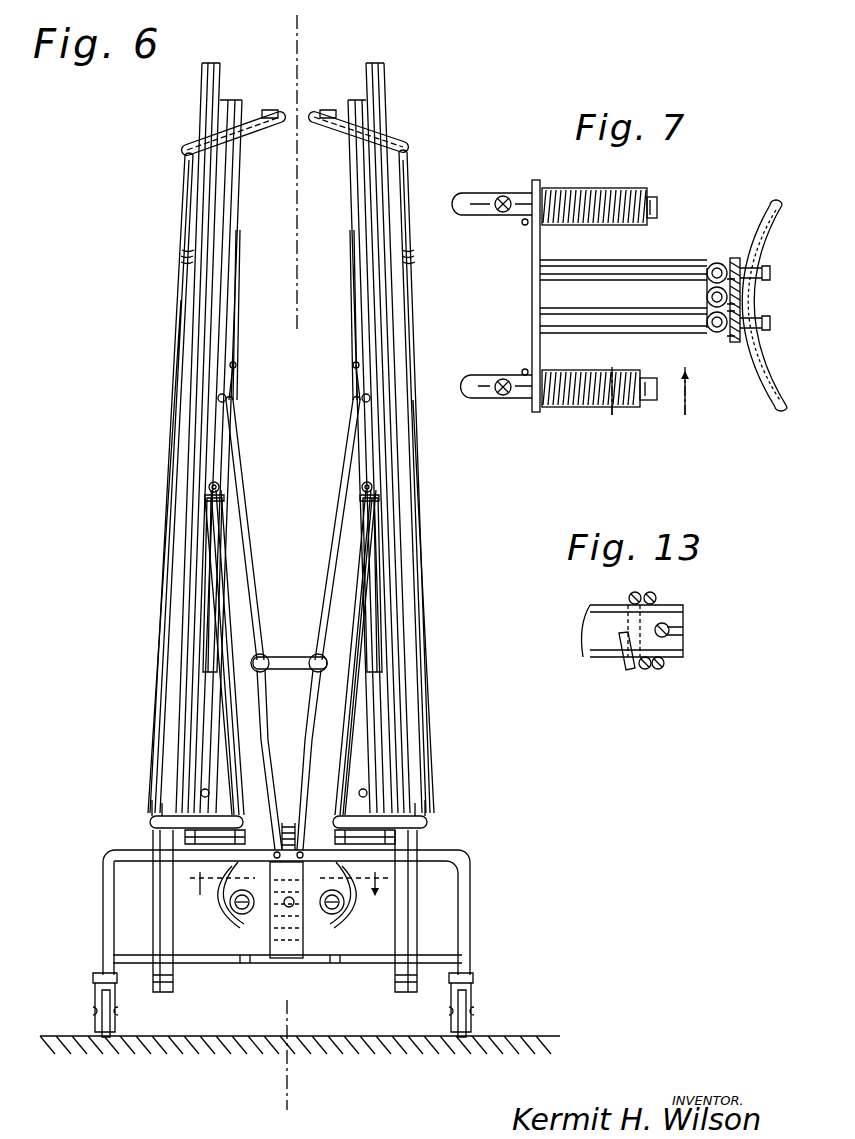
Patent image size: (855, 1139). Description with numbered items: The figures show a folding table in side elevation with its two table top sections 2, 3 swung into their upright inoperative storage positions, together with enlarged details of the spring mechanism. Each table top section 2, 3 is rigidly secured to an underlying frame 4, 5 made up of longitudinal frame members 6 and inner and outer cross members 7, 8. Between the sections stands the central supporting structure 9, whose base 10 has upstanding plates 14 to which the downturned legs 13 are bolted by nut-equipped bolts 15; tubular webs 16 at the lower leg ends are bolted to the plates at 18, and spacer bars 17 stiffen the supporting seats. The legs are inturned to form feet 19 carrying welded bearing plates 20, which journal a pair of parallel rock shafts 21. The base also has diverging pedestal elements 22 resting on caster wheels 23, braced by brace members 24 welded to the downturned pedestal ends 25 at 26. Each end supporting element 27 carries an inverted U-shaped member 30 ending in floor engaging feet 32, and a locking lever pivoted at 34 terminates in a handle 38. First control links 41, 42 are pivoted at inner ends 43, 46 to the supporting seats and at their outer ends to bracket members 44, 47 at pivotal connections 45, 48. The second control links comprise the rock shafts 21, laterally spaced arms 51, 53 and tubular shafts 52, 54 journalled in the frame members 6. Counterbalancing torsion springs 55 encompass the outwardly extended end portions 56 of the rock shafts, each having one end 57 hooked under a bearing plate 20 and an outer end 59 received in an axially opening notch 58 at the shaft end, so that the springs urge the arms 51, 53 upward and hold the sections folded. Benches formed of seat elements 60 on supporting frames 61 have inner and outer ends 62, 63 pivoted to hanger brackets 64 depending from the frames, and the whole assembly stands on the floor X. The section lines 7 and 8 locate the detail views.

In FIG. 6, the table top section 2 is at (216, 108).
In FIG. 6, the table top section 3 is at (375, 118).
In FIG. 6, the underlying frame 4 is at (236, 318).
In FIG. 6, the underlying frame 5 is at (352, 304).
In FIG. 6, the longitudinally extending frame member 6 is at (236, 260).
In FIG. 6, the inner cross member 7 is at (294, 904).
In FIG. 6, the outer cross member 8 is at (265, 35).
In FIG. 6, the central supporting structure 9 is at (289, 896).
In FIG. 6, the base 10 is at (266, 968).
In FIG. 6, the leg 13 is at (309, 700).
In FIG. 7, the leg 13 is at (711, 265).
In FIG. 6, the upstanding plate 14 is at (304, 948).
In FIG. 7, the upstanding plate 14 is at (742, 320).
In FIG. 6, the nut-equipped bolt 15 is at (303, 847).
In FIG. 7, the nut-equipped bolt 15 is at (771, 272).
In FIG. 6, the tubular web 16 is at (289, 822).
In FIG. 7, the tubular web 16 is at (706, 297).
In FIG. 6, the spacer bar 17 is at (290, 657).
In FIG. 6, the bolt connection 18 is at (294, 906).
In FIG. 7, the bolt connection 18 is at (705, 310).
In FIG. 7, the foot 19 is at (630, 268).
In FIG. 7, the bearing plate 20 is at (532, 296).
In FIG. 7, the rock shaft 21 is at (468, 216).
In FIG. 13, the rock shaft 21 is at (590, 622).
In FIG. 6, the pedestal element 22 is at (146, 848).
In FIG. 6, the caster wheel 23 is at (96, 1006).
In FIG. 6, the brace member 24 is at (200, 968).
In FIG. 7, the brace member 24 is at (766, 400).
In FIG. 6, the downturned end 25 is at (103, 915).
In FIG. 6, the weld connection 26 is at (112, 958).
In FIG. 6, the end supporting element 27 is at (212, 604).
In FIG. 6, the U-shaped member 30 is at (208, 550).
In FIG. 6, the floor engaging foot 32 is at (205, 498).
In FIG. 6, the pivotal connection 34 is at (203, 792).
In FIG. 6, the handle 38 is at (222, 916).
In FIG. 6, the first control link 41 is at (250, 548).
In FIG. 6, the first control link 42 is at (338, 520).
In FIG. 6, the inner end pivot 43 is at (262, 652).
In FIG. 6, the bracket member 44 is at (238, 385).
In FIG. 6, the pivotal connection 45 is at (227, 398).
In FIG. 6, the pivotal connection 46 is at (315, 652).
In FIG. 6, the bracket member 47 is at (350, 385).
In FIG. 6, the pivotal connection 48 is at (361, 398).
In FIG. 6, the arm 51 is at (225, 702).
In FIG. 7, the arm 51 is at (501, 396).
In FIG. 6, the tubular transverse shaft 52 is at (208, 484).
In FIG. 6, the arm 53 is at (350, 725).
In FIG. 7, the arm 53 is at (503, 196).
In FIG. 6, the tubular shaft 54 is at (374, 487).
In FIG. 6, the counterbalancing torsion spring 55 is at (247, 914).
In FIG. 7, the counterbalancing torsion spring 55 is at (584, 190).
In FIG. 13, the counterbalancing torsion spring 55 is at (633, 671).
In FIG. 7, the extended end portion 56 is at (658, 205).
In FIG. 13, the extended end portion 56 is at (672, 610).
In FIG. 7, the spring end 57 is at (523, 225).
In FIG. 13, the notch 58 is at (690, 641).
In FIG. 7, the outer spring end 59 is at (657, 219).
In FIG. 13, the outer spring end 59 is at (690, 630).
In FIG. 6, the seat element 60 is at (176, 373).
In FIG. 6, the supporting frame 61 is at (170, 402).
In FIG. 6, the inner end 62 is at (263, 133).
In FIG. 6, the outer end 63 is at (158, 816).
In FIG. 6, the hanger bracket 64 is at (268, 110).
In FIG. 6, the floor X is at (310, 1034).